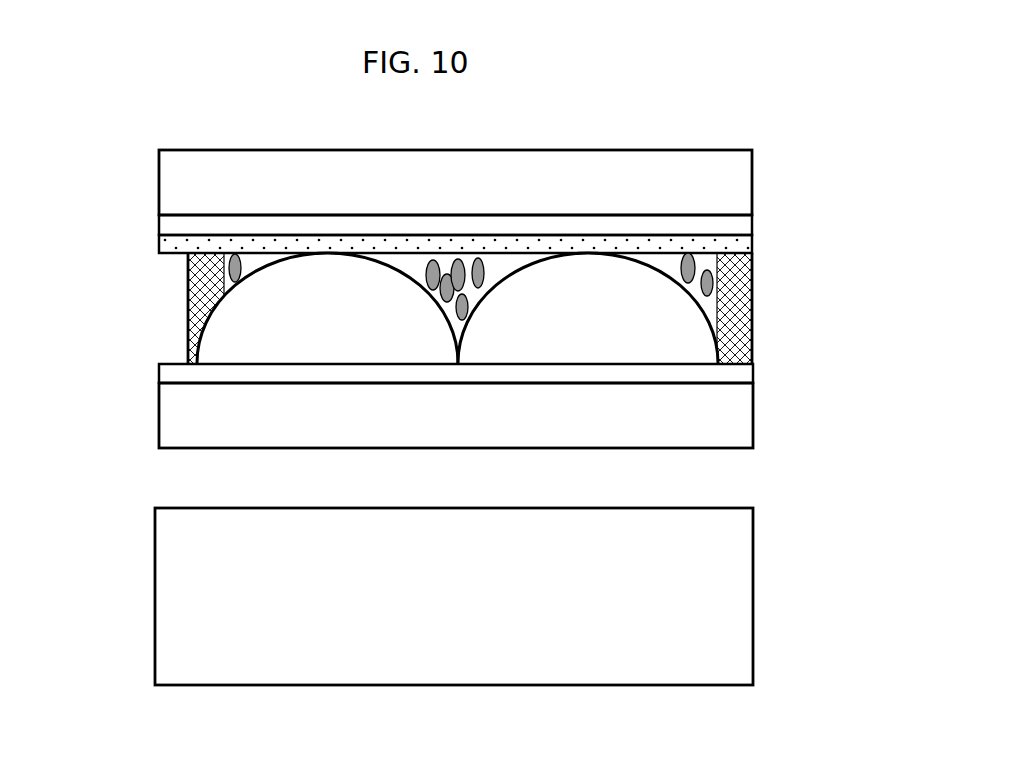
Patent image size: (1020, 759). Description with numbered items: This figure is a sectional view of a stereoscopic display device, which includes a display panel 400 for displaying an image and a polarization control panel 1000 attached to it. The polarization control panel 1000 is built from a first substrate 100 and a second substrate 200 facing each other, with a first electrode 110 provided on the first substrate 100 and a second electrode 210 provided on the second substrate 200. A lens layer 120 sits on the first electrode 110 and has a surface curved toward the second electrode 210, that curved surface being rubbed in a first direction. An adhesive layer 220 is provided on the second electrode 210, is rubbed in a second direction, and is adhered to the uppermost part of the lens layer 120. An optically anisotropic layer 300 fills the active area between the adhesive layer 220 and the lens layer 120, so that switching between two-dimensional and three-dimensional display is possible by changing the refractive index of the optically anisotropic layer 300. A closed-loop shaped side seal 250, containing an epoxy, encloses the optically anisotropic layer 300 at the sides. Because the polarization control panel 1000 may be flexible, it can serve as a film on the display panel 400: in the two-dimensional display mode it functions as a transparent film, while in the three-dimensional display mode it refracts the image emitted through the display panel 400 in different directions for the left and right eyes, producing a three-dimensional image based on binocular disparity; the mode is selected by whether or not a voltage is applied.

The polarization control panel 1000 is at (137, 148).
The first substrate 100 is at (738, 418).
The first electrode 110 is at (755, 373).
The lens layer 120 is at (658, 341).
The second substrate 200 is at (753, 200).
The second electrode 210 is at (753, 227).
The adhesive layer 220 is at (753, 246).
The side seal 250 is at (215, 293).
The optically anisotropic layer 300 is at (488, 258).
The display panel 400 is at (735, 592).